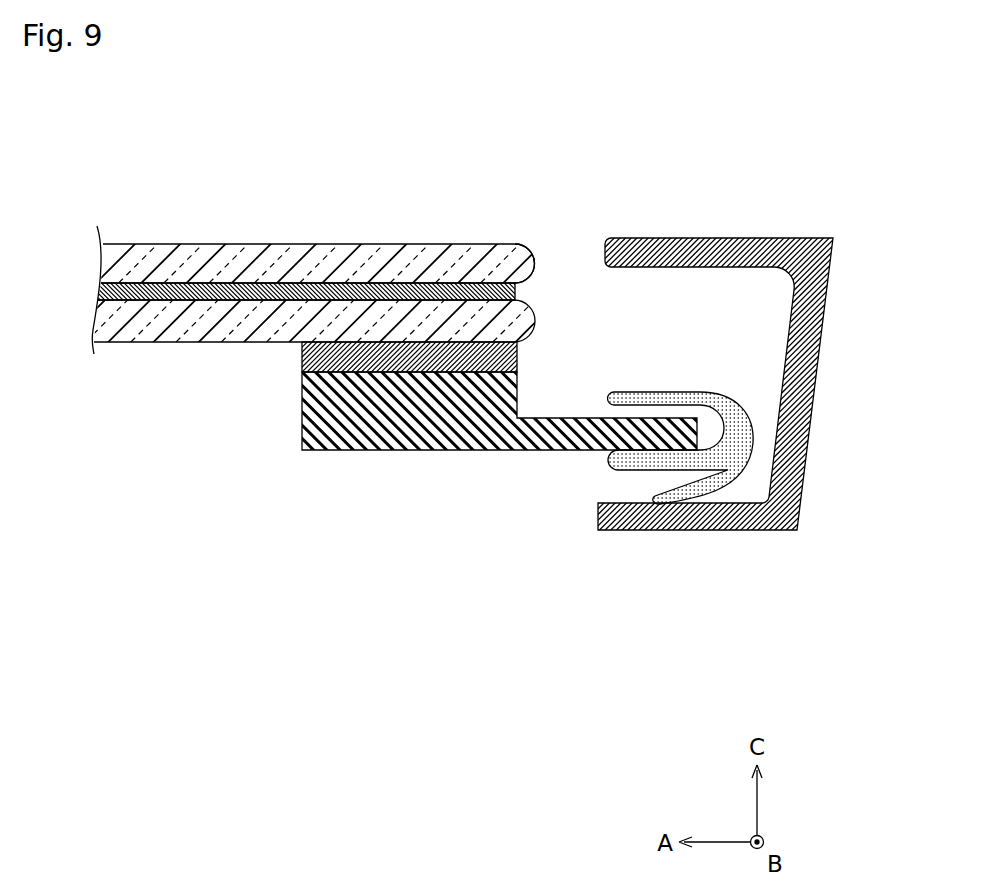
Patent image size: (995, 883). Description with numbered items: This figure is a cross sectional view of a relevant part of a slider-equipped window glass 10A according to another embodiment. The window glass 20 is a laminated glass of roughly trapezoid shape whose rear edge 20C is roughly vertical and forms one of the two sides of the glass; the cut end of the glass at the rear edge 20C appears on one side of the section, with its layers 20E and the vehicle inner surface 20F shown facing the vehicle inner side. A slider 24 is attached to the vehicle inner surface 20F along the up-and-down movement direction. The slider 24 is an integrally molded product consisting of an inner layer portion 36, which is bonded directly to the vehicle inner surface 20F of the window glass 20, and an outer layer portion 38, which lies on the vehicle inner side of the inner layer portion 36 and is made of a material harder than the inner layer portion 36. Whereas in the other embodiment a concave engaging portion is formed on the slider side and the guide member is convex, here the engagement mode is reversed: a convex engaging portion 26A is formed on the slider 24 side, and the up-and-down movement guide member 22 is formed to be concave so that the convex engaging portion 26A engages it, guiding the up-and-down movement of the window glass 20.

The slider-equipped window glass 10A is at (341, 148).
The window glass 20 is at (189, 243).
The upper insulating layer of flat conductor 20E is at (406, 243).
The rear edge 20C is at (537, 262).
The vehicle inner surface 20F is at (162, 344).
The up-and-down movement guide member 22 is at (715, 247).
The slider 24 is at (293, 410).
The inner layer portion 36 is at (519, 352).
The outer layer portion 38 is at (412, 451).
The convex engaging portion 26A is at (737, 447).